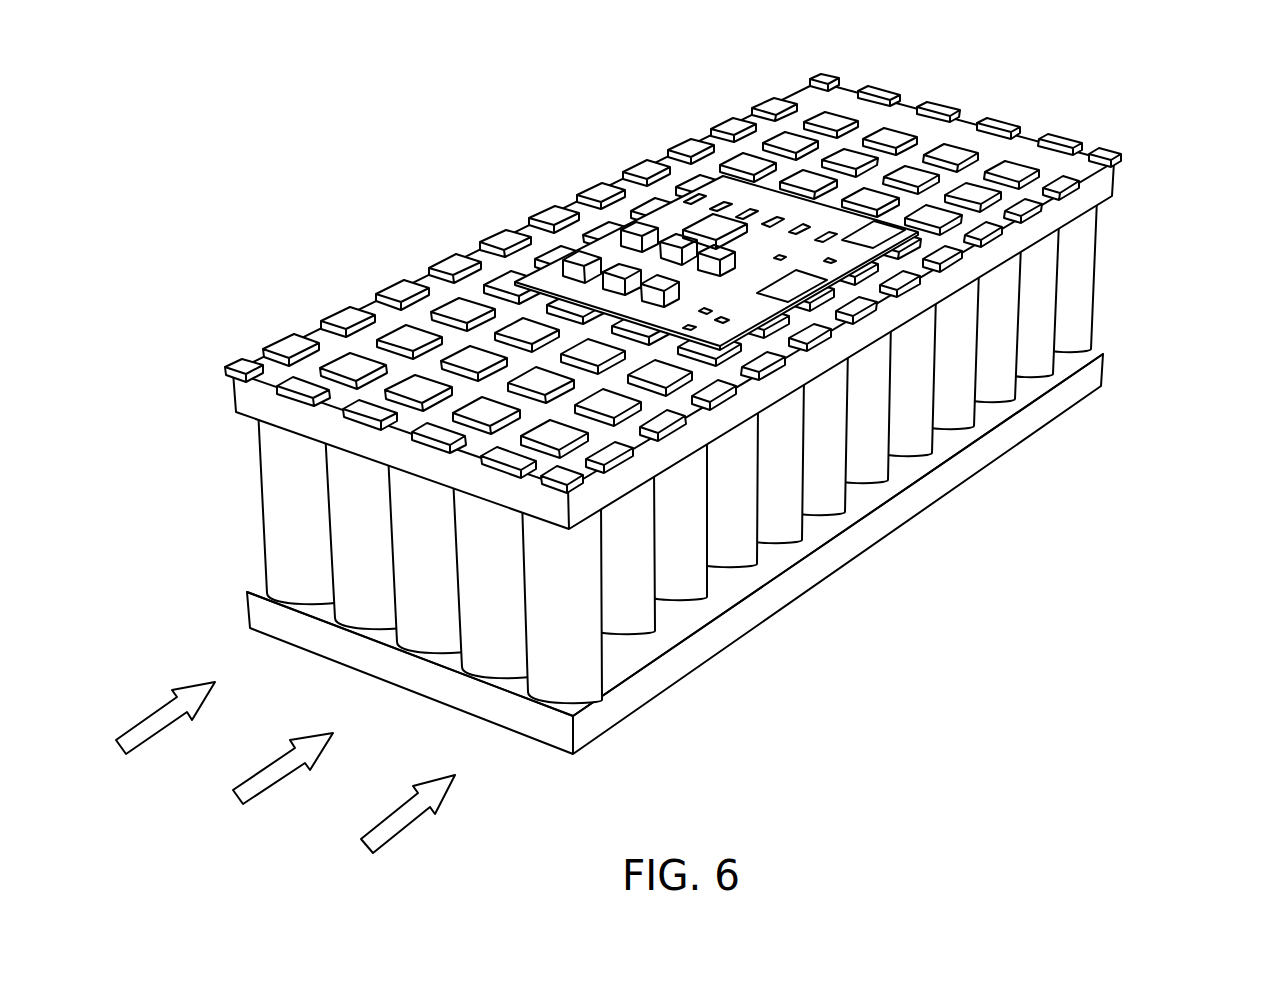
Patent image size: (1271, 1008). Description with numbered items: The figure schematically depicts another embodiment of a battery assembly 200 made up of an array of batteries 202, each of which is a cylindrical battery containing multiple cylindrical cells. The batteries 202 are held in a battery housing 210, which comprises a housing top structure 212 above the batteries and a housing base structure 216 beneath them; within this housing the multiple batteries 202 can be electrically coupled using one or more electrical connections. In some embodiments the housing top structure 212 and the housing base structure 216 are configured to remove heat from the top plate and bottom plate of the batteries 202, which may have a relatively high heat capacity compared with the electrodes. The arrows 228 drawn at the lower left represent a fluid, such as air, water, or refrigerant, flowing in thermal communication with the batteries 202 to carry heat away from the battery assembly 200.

The battery assembly 200 is at (694, 391).
The battery housing 210 is at (694, 391).
The housing top structure 212 is at (236, 397).
The housing base structure 216 is at (250, 618).
The battery 202 is at (492, 673).
The arrows 228 is at (135, 723).